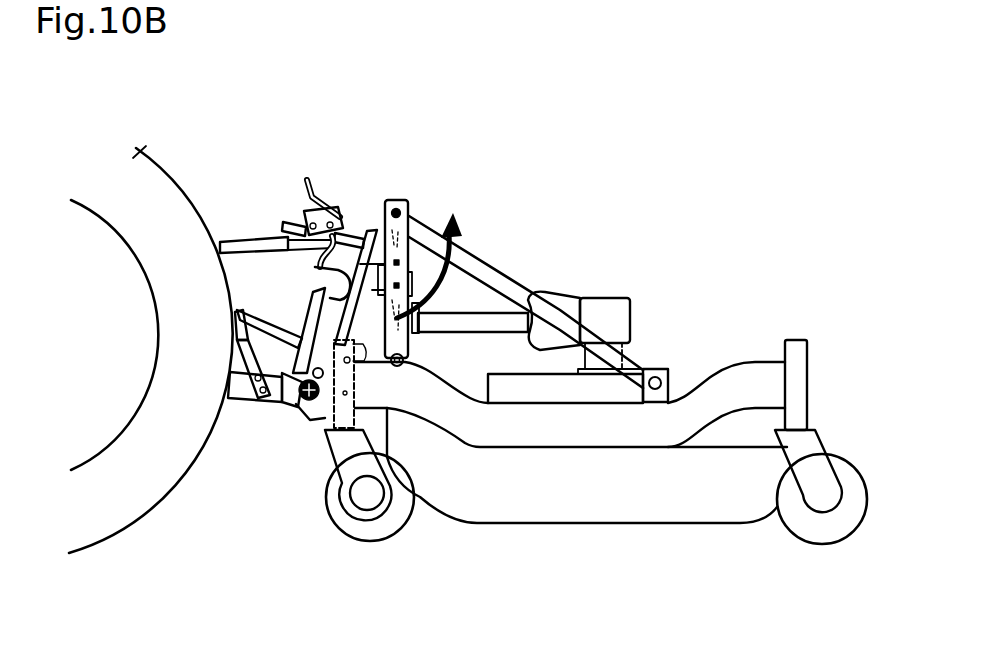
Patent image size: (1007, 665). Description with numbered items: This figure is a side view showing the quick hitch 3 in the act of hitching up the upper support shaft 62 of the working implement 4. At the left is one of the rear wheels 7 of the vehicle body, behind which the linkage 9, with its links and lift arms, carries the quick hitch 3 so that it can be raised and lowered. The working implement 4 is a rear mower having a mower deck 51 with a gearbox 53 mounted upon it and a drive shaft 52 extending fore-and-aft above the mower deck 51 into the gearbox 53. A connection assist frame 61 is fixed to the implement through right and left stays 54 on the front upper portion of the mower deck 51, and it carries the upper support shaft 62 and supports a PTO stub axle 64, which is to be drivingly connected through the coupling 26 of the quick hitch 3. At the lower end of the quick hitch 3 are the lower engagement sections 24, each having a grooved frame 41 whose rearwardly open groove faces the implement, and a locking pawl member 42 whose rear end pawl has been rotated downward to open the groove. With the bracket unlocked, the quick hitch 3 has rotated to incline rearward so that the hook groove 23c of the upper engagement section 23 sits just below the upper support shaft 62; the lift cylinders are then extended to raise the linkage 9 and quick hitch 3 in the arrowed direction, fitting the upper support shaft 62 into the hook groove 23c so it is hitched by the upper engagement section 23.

The quick hitch 3 is at (346, 182).
The working implement 4 is at (603, 220).
The rear wheels 7 is at (142, 154).
The linkage 9 is at (237, 213).
The upper engagement section 23 is at (371, 285).
The hook groove 23c is at (428, 220).
The lower engagement sections 24 is at (365, 415).
The coupling 26 is at (318, 300).
The grooved frame 41 is at (363, 393).
The locking pawl member 42 is at (319, 414).
The mower deck 51 is at (673, 524).
The drive shaft 52 is at (516, 310).
The gearbox 53 is at (628, 309).
The stays 54 is at (410, 362).
The connection assist frame 61 is at (412, 198).
The upper support shaft 62 is at (391, 211).
The PTO stub axle 64 is at (420, 310).